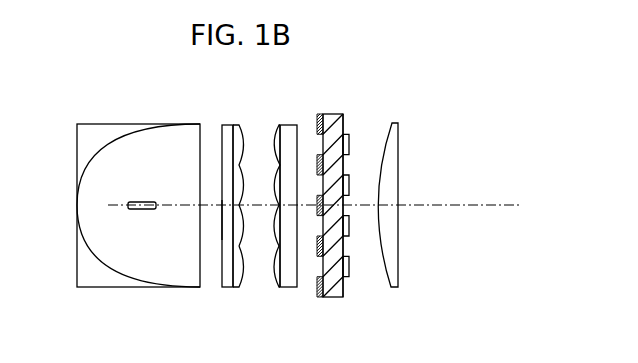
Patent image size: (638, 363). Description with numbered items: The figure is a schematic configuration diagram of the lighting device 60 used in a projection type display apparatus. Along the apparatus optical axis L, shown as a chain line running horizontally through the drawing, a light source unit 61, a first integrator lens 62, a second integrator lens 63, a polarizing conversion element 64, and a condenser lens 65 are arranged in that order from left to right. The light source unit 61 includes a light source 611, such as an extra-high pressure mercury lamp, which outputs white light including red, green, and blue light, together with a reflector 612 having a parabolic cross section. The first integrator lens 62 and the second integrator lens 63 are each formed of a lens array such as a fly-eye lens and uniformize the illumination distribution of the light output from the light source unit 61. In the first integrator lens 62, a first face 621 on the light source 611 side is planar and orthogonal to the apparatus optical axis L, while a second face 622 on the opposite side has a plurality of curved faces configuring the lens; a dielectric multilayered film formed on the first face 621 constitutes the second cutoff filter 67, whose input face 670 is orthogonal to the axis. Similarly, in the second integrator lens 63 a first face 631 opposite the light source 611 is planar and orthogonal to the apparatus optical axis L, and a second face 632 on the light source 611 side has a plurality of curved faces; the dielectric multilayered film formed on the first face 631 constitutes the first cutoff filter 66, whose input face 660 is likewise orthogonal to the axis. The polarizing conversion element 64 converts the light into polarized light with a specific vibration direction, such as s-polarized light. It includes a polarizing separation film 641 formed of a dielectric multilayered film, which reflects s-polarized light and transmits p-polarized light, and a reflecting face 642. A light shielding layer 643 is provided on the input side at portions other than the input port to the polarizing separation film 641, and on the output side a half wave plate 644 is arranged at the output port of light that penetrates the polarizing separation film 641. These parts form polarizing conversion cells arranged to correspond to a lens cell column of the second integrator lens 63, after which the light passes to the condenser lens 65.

The lighting device 60 is at (446, 107).
The light source unit 61 is at (153, 84).
The light source 611 is at (146, 201).
The reflector 612 is at (112, 160).
The first integrator lens 62 is at (235, 124).
The first face of first integrator lens 621 is at (232, 235).
The second face of first integrator lens 622 is at (246, 260).
The second integrator lens 63 is at (283, 124).
The first face of second integrator lens 631 is at (288, 232).
The second face of second integrator lens 632 is at (275, 150).
The polarizing conversion element 64 is at (333, 114).
The polarizing separation film 641 is at (328, 275).
The reflecting face 642 is at (343, 250).
The light shielding layer 643 is at (317, 258).
The half wave plate 644 is at (349, 226).
The condenser lens 65 is at (396, 123).
The first cutoff filter 66 is at (297, 124).
The second cutoff filter 67 is at (223, 124).
The input face of first cutoff filter 660 is at (275, 250).
The input face of second cutoff filter 670 is at (222, 218).
The apparatus optical axis L is at (458, 205).